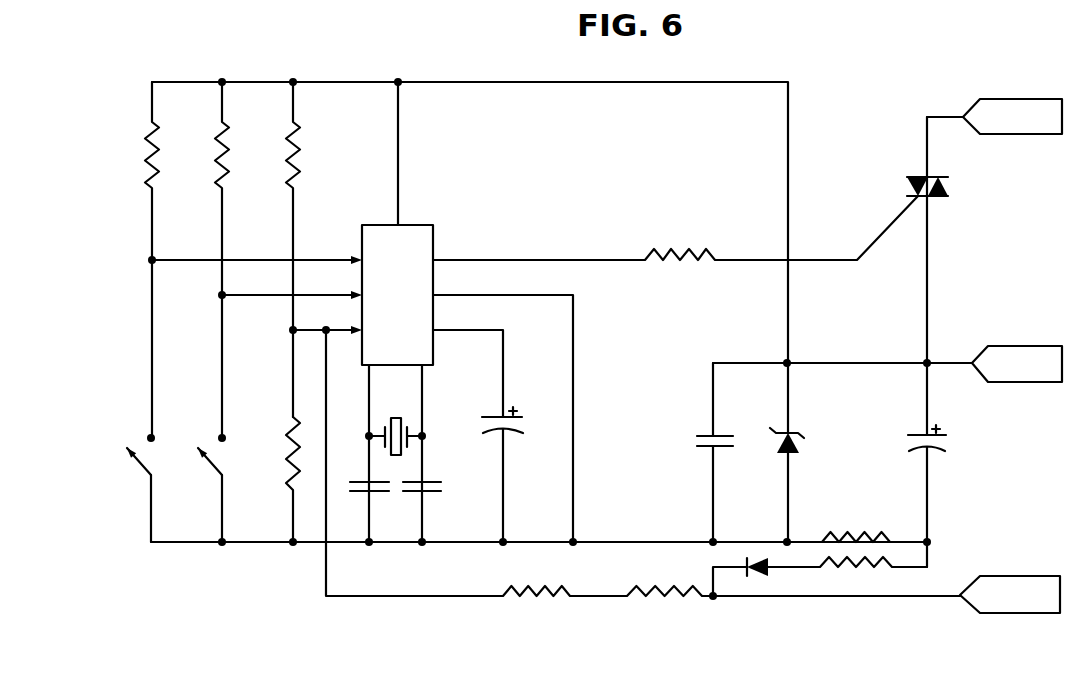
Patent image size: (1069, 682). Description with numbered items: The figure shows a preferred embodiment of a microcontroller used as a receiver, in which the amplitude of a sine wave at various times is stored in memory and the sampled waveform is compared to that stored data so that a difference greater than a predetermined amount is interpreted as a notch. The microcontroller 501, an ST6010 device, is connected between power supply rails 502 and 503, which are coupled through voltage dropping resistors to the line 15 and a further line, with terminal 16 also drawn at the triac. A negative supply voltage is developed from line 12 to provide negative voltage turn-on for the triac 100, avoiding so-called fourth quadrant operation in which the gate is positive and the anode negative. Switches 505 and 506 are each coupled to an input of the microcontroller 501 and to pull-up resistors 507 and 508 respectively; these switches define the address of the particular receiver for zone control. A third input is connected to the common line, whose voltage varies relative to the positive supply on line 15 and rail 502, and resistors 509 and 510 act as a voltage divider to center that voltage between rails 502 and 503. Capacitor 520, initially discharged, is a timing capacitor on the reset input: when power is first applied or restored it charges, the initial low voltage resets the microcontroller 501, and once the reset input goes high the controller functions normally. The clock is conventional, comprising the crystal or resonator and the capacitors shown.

The triac 100 is at (950, 187).
The line 12 is at (1010, 594).
The line 15 is at (1017, 364).
The terminal 16 is at (994, 116).
The microcontroller 501 is at (437, 224).
The power supply rail 502 is at (617, 88).
The power supply rail 503 is at (652, 540).
The switch 505 is at (140, 467).
The switch 506 is at (212, 467).
The pull-up resistor 507 is at (165, 175).
The pull-up resistor 508 is at (236, 175).
The resistor 509 is at (307, 175).
The resistor 510 is at (292, 437).
The timing capacitor 520 is at (525, 425).